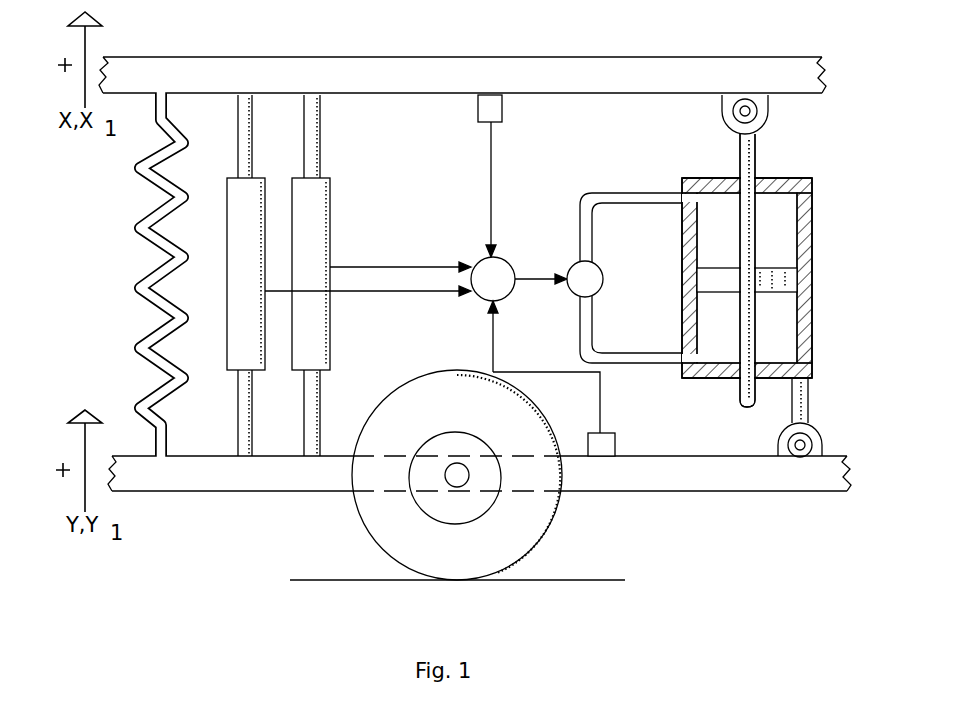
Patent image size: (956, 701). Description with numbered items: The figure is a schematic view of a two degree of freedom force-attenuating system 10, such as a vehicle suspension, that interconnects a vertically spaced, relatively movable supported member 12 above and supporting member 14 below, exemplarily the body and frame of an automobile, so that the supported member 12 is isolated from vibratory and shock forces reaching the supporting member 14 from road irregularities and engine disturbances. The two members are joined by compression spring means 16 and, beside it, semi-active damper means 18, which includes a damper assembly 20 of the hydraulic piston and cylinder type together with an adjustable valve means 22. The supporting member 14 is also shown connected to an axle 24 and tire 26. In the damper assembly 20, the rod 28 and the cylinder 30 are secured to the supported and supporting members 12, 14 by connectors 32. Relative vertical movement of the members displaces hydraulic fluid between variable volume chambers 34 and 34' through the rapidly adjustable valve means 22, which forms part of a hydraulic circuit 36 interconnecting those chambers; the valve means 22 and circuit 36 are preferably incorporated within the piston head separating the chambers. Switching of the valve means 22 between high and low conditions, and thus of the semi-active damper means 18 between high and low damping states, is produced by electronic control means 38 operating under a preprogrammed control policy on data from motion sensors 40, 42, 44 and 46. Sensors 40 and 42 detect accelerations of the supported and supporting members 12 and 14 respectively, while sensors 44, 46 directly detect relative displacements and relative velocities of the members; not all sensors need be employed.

The force-attenuating system 10 is at (217, 32).
The supported member 12 is at (440, 72).
The supporting member 14 is at (660, 476).
The compression spring means 16 is at (137, 288).
The semi-active damper means 18 is at (582, 190).
The damper assembly 20 is at (737, 178).
The adjustable valve means 22 is at (603, 275).
The axle 24 is at (455, 477).
The tire 26 is at (378, 520).
The rod 28 is at (756, 156).
The cylinder 30 is at (812, 203).
The connectors 32 is at (768, 113).
The variable volume chamber 34 is at (716, 233).
The variable volume chamber 34' is at (719, 321).
The hydraulic circuit 36 is at (612, 362).
The electronic control means 38 is at (480, 262).
The motion sensor 40 is at (480, 113).
The motion sensor 42 is at (608, 433).
The motion sensor 44 is at (322, 150).
The motion sensor 46 is at (240, 150).